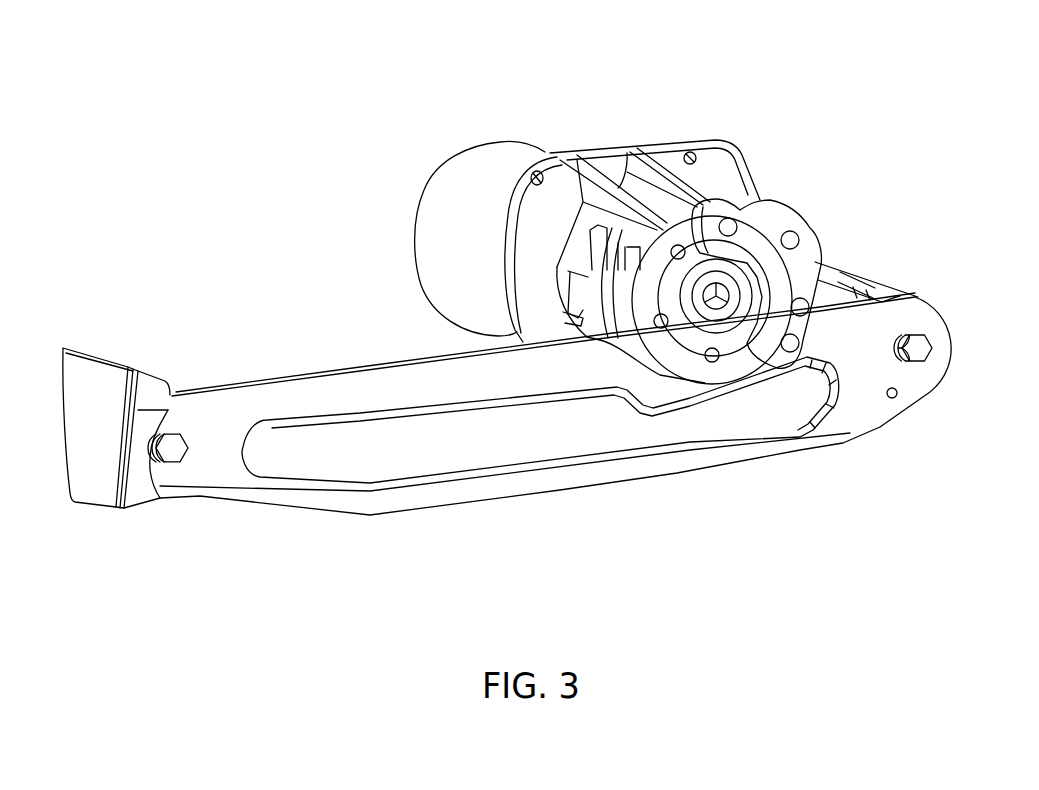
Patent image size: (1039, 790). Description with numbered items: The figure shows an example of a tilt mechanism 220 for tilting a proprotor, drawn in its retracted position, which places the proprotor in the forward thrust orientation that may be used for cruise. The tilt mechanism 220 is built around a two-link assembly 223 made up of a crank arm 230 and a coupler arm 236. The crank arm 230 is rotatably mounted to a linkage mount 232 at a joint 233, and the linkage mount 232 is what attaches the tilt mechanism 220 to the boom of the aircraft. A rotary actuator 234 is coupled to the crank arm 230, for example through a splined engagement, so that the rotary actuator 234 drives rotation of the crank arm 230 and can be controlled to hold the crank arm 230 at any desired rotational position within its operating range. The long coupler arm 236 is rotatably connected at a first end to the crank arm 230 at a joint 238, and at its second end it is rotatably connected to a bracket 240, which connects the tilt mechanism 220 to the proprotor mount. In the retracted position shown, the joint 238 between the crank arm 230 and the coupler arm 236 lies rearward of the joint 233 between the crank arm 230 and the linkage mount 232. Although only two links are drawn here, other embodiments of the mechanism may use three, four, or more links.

The tilt mechanism 220 is at (232, 112).
The two-link assembly 223 is at (958, 268).
The crank arm 230 is at (843, 268).
The linkage mount 232 is at (733, 160).
The joint 233 is at (772, 187).
The rotary actuator 234 is at (530, 152).
The coupler arm 236 is at (678, 473).
The joint 238 is at (958, 397).
The bracket 240 is at (122, 508).